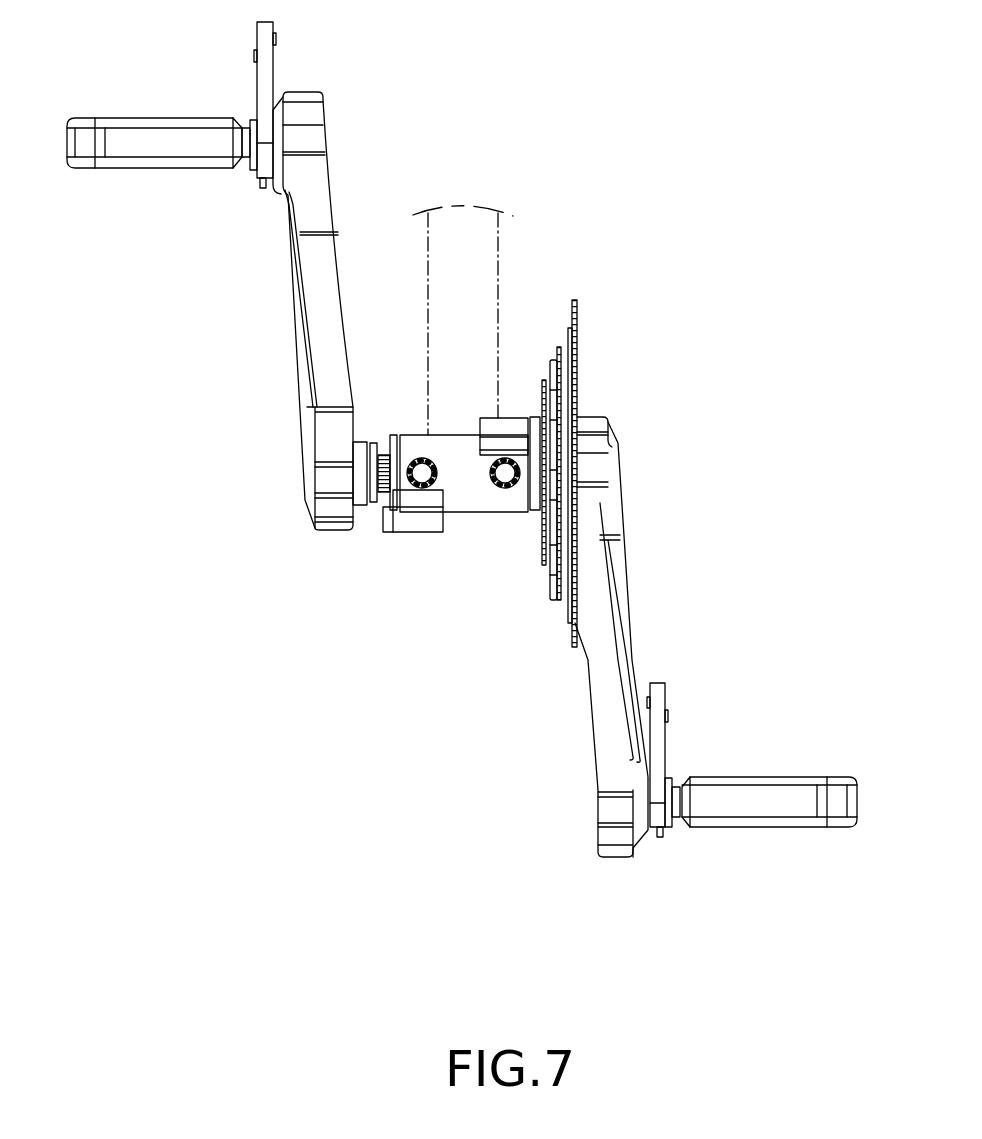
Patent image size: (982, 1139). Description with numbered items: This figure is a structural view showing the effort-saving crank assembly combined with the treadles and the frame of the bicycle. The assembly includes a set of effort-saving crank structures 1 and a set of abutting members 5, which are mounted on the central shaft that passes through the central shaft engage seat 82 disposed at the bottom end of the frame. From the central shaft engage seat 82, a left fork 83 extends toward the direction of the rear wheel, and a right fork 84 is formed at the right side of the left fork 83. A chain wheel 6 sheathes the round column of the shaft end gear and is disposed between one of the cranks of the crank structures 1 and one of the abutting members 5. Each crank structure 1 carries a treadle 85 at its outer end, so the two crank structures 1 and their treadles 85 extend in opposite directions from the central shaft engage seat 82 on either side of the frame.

The effort-saving crank structure 1 is at (341, 157).
The abutting member 5 is at (509, 412).
The chain wheel 6 is at (586, 326).
The central shaft engage seat 82 is at (458, 514).
The left fork 83 is at (418, 460).
The right fork 84 is at (505, 490).
The treadle 85 is at (145, 137).